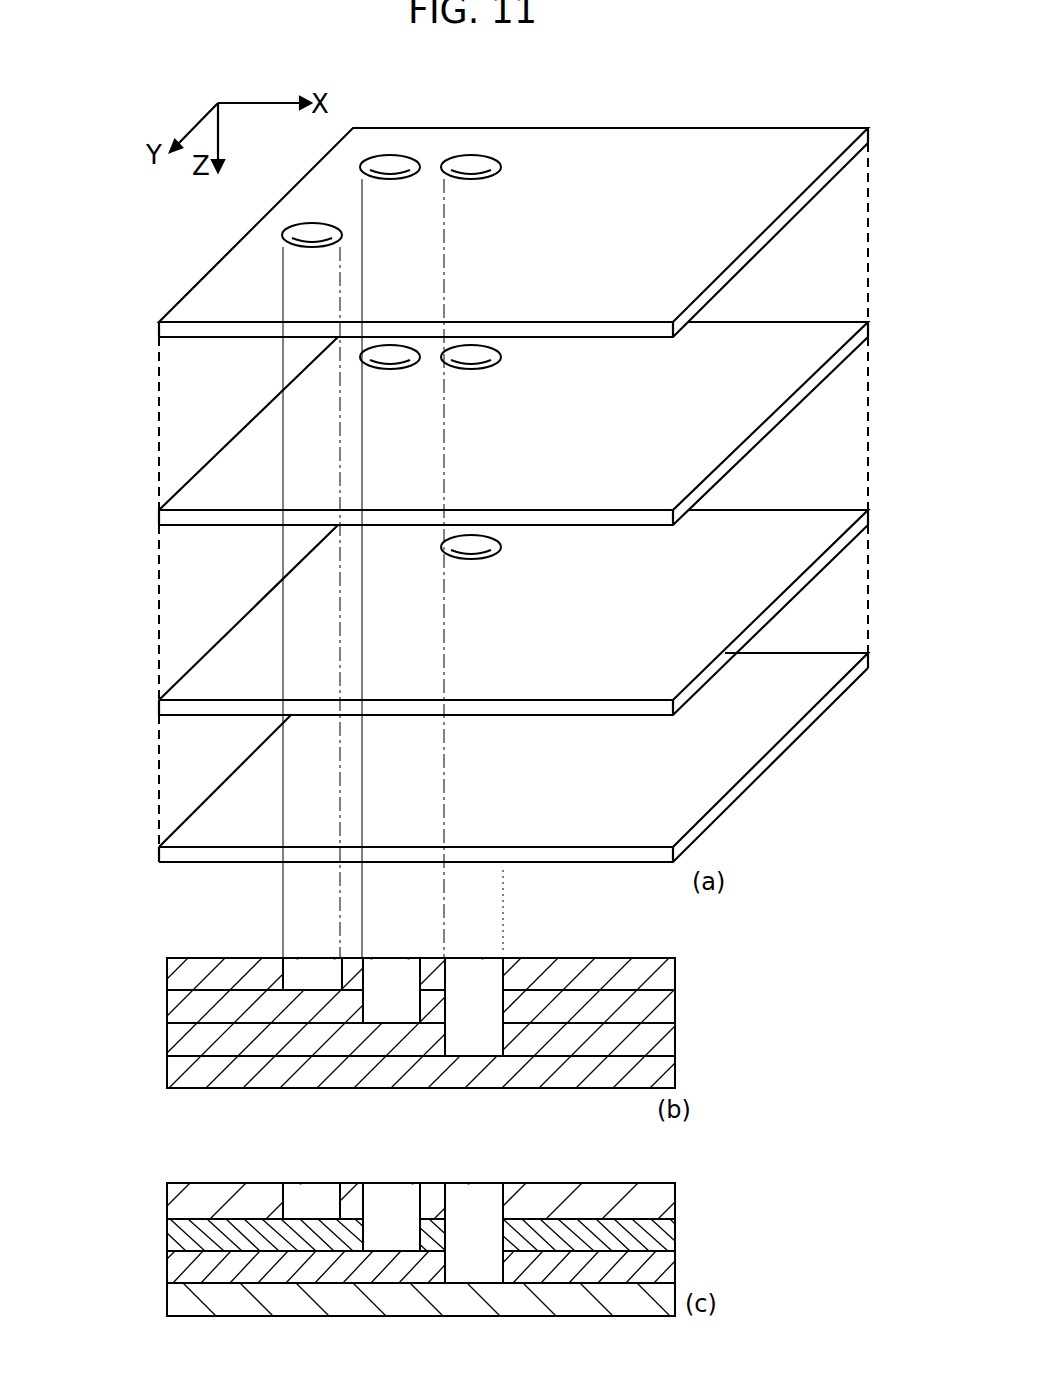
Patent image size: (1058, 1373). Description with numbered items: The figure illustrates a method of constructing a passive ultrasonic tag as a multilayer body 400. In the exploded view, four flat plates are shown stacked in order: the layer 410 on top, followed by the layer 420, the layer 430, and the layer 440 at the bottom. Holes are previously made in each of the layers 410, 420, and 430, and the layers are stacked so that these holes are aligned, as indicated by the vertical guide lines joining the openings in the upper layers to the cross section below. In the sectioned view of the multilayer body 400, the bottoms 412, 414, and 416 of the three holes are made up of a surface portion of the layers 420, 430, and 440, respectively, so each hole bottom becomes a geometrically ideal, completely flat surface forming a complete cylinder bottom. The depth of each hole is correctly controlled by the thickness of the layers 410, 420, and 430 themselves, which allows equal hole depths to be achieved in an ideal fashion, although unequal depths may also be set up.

The multilayer body 400 is at (126, 1097).
The layer 410 is at (803, 205).
The layer 420 is at (803, 393).
The layer 430 is at (803, 583).
The layer 440 is at (803, 730).
The bottom 412 is at (302, 992).
The bottom 414 is at (382, 1025).
The bottom 416 is at (480, 1057).